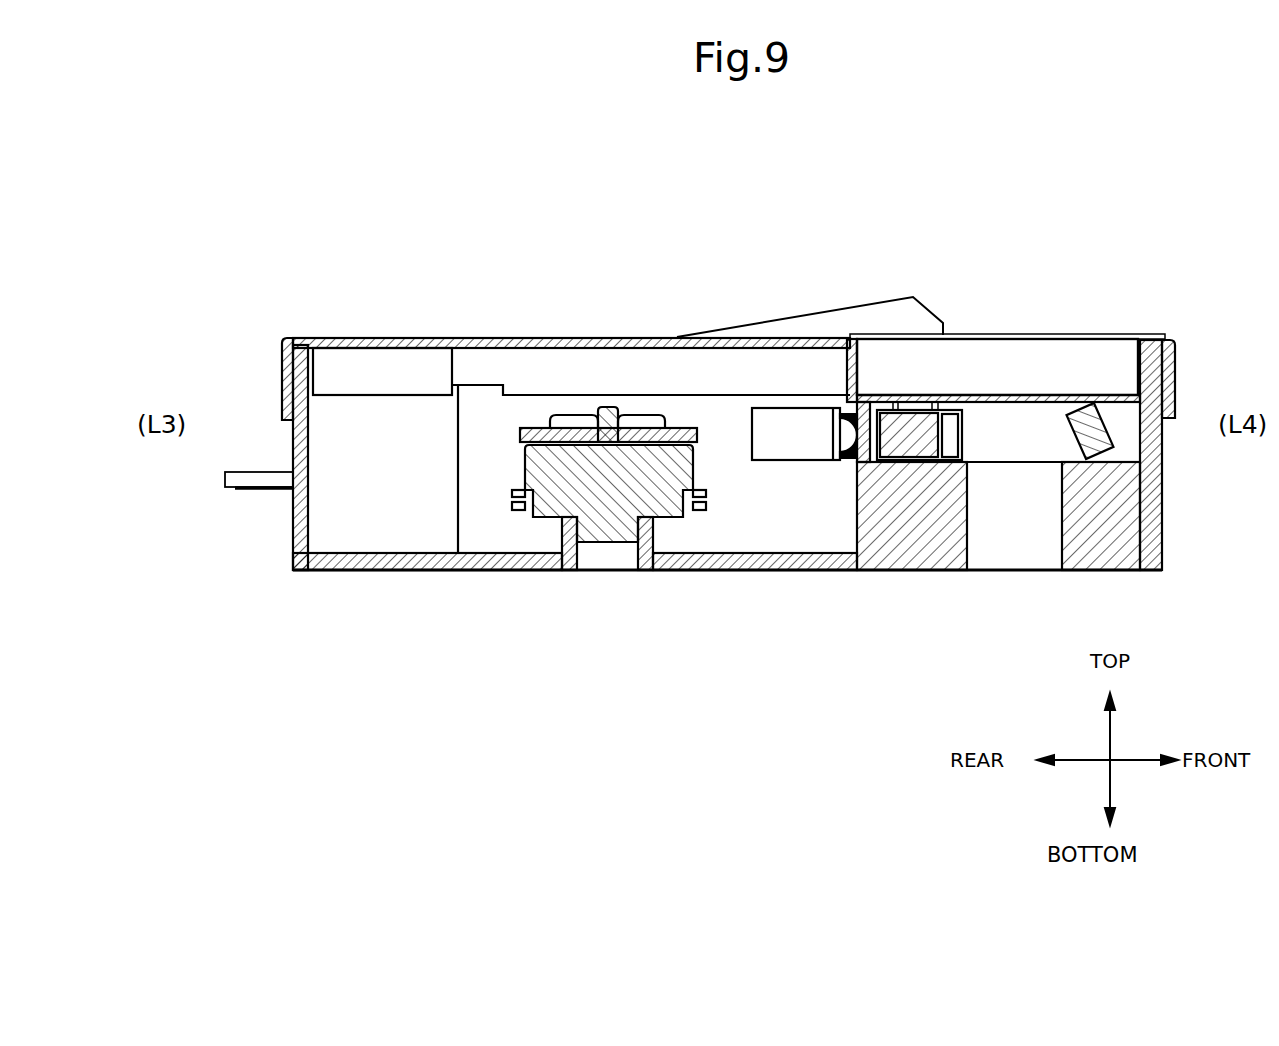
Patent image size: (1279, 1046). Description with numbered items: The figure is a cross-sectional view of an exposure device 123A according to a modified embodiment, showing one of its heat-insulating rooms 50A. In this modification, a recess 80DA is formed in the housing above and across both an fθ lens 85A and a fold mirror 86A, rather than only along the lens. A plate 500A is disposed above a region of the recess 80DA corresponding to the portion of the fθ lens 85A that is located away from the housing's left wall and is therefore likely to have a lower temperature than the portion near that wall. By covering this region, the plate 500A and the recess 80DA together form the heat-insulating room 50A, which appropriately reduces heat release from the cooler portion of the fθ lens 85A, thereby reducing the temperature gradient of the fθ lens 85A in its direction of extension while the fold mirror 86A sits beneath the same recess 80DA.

The exposure device 123A is at (731, 395).
The heat-insulating room 50A is at (890, 365).
The recess 80DA is at (963, 367).
The plate 500A is at (1066, 334).
The fθ lens 85A is at (902, 447).
The fold mirror 86A is at (1082, 445).